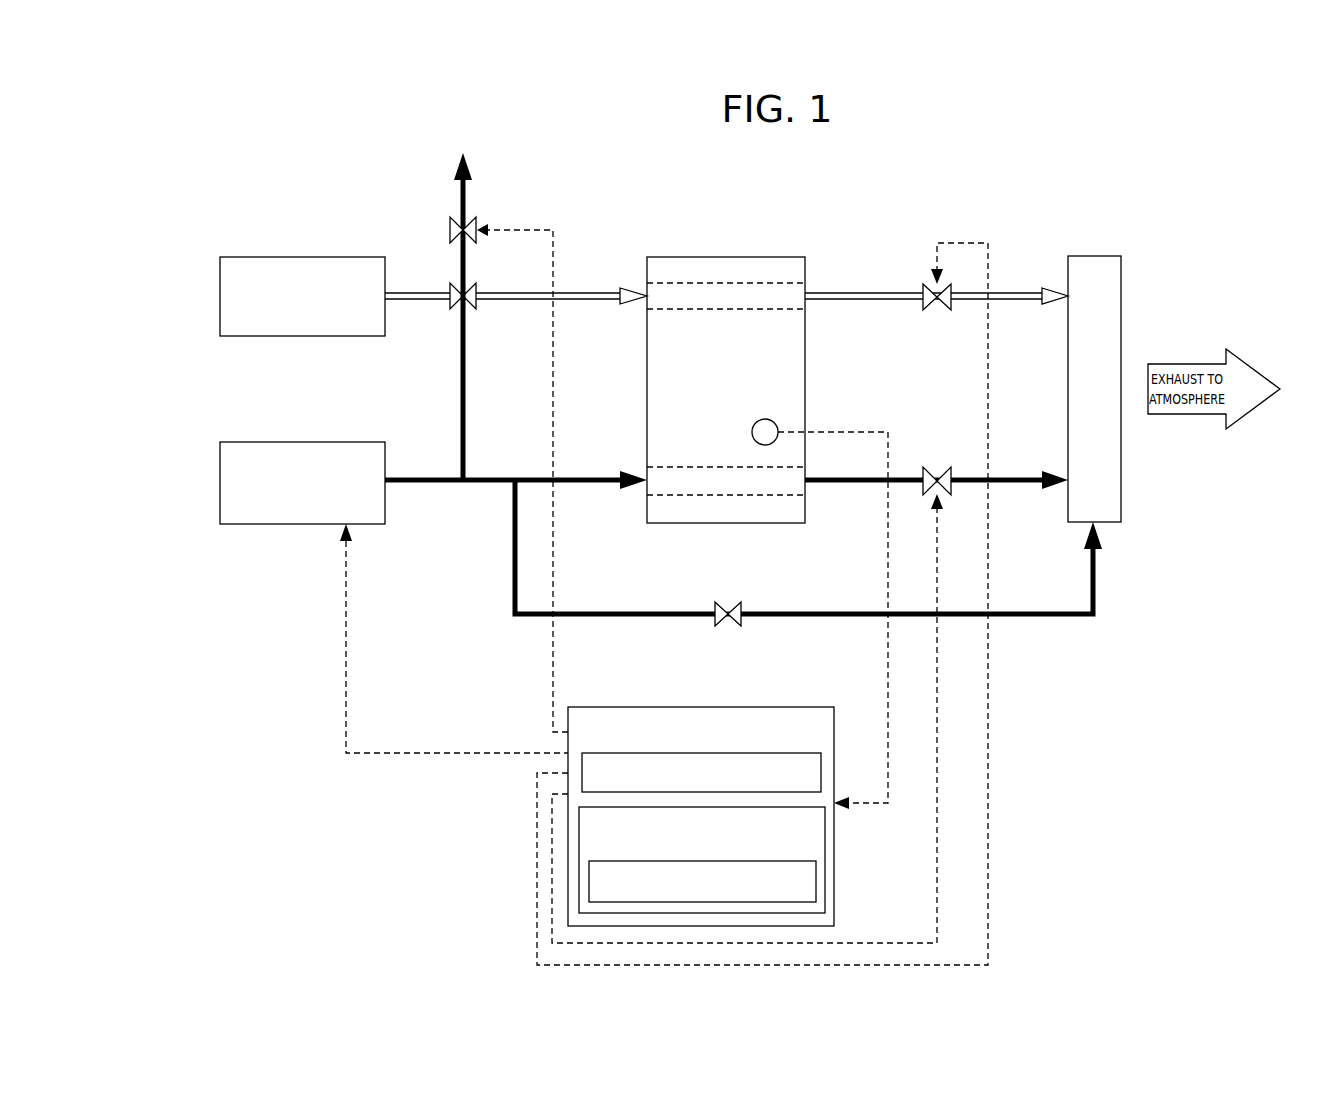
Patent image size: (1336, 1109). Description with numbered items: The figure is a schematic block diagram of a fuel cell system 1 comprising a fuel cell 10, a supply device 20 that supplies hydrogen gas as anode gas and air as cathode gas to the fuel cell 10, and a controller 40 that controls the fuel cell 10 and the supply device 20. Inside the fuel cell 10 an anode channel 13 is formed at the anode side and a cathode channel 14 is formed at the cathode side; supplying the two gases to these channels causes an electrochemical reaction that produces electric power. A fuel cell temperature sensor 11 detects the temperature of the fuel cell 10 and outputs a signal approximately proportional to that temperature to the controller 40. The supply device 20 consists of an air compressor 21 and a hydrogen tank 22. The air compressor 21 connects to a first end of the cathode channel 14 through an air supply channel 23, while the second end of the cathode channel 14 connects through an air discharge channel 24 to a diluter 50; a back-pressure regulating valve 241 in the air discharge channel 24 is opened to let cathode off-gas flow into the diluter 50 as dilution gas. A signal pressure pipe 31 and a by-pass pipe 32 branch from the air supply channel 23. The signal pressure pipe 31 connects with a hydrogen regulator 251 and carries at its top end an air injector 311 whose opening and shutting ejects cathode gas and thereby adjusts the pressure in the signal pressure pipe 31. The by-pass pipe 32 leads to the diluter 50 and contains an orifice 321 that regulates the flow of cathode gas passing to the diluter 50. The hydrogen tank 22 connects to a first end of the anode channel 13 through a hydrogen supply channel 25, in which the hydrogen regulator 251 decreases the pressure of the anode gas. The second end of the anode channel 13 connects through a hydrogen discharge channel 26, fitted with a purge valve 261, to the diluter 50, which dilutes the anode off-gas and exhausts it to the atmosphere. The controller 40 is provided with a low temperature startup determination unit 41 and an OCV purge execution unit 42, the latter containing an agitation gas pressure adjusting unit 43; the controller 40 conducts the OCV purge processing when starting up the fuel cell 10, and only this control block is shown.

The fuel cell system 1 is at (1141, 150).
The fuel cell 10 is at (745, 257).
The fuel cell temperature sensor 11 is at (778, 426).
The anode channel 13 is at (695, 283).
The cathode channel 14 is at (717, 500).
The supply device 20 is at (200, 376).
The air compressor 21 is at (270, 442).
The hydrogen tank 22 is at (270, 257).
The air supply channel 23 is at (402, 480).
The air discharge channel 24 is at (835, 480).
The back-pressure regulating valve 241 is at (931, 497).
The hydrogen supply channel 25 is at (402, 293).
The hydrogen regulator 251 is at (476, 290).
The hydrogen discharge channel 26 is at (835, 293).
The purge valve 261 is at (920, 304).
The signal pressure pipe 31 is at (470, 466).
The air injector 311 is at (472, 217).
The by-pass pipe 32 is at (595, 614).
The orifice 321 is at (715, 618).
The controller 40 is at (760, 707).
The low temperature startup determination unit 41 is at (812, 753).
The OCV purge execution unit 42 is at (816, 807).
The agitation gas pressure adjusting unit 43 is at (816, 870).
The diluter 50 is at (1110, 256).